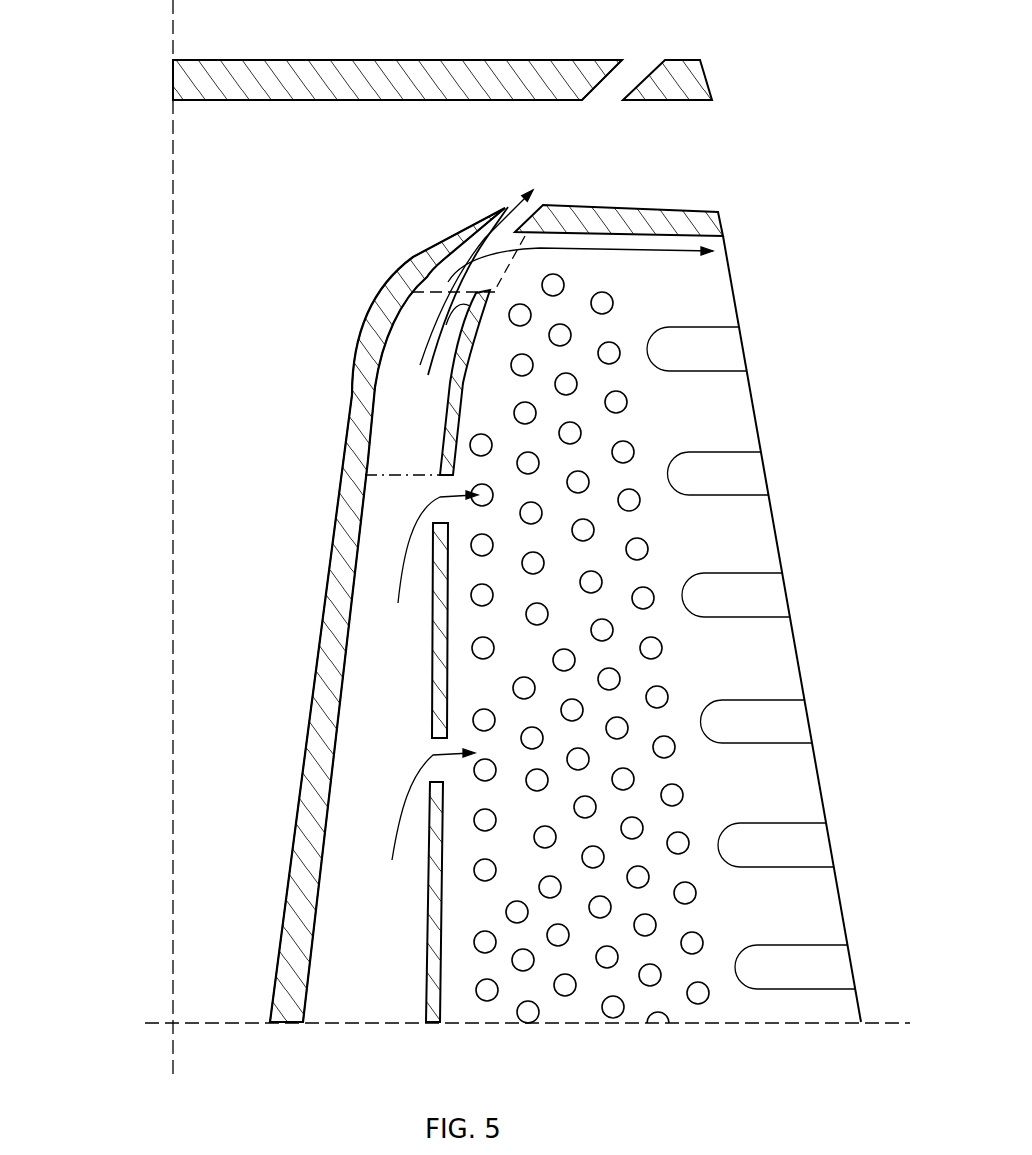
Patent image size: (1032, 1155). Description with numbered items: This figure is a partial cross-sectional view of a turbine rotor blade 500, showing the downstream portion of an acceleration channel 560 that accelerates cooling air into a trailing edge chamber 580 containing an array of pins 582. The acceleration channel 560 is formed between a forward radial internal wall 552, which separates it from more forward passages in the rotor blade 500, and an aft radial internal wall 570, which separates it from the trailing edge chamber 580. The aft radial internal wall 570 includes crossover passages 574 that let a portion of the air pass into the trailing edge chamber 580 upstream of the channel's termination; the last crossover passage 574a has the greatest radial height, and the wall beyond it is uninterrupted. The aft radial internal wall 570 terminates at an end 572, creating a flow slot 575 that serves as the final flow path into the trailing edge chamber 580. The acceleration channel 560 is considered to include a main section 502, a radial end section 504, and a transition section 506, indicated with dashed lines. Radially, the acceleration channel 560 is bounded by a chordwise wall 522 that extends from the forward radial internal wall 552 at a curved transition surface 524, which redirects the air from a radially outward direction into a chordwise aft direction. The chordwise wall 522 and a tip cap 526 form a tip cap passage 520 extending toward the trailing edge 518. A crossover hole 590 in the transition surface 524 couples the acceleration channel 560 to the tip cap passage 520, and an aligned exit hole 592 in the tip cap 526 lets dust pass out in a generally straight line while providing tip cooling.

The rotor blade 500 is at (471, 537).
The main section 502 is at (340, 763).
The radial end section 504 is at (385, 437).
The transition section 506 is at (450, 266).
The trailing edge 518 is at (738, 280).
The tip cap passage 520 is at (668, 149).
The chordwise wall 522 is at (712, 226).
The transition surface 524 is at (430, 283).
The tip cap 526 is at (500, 100).
The forward radial internal wall 552 is at (333, 595).
The acceleration channel 560 is at (410, 659).
The aft radial internal wall 570 is at (427, 962).
The end 572 is at (446, 382).
The crossover passages 574 is at (437, 772).
The last crossover passage 574a is at (437, 488).
The flow slot 575 is at (503, 266).
The trailing edge chamber 580 is at (583, 1015).
The pins 582 is at (488, 995).
The crossover hole 590 is at (510, 210).
The exit hole 592 is at (630, 72).